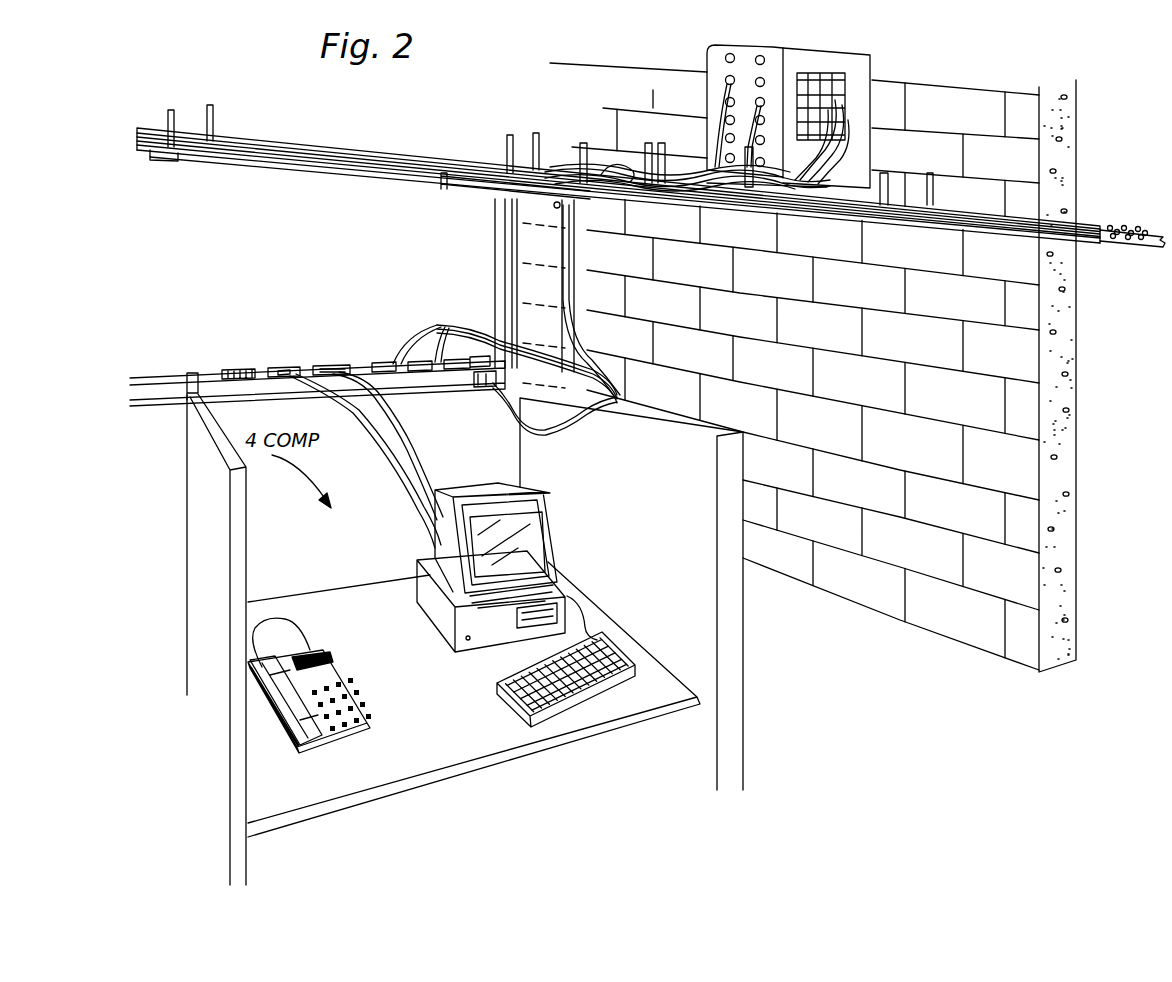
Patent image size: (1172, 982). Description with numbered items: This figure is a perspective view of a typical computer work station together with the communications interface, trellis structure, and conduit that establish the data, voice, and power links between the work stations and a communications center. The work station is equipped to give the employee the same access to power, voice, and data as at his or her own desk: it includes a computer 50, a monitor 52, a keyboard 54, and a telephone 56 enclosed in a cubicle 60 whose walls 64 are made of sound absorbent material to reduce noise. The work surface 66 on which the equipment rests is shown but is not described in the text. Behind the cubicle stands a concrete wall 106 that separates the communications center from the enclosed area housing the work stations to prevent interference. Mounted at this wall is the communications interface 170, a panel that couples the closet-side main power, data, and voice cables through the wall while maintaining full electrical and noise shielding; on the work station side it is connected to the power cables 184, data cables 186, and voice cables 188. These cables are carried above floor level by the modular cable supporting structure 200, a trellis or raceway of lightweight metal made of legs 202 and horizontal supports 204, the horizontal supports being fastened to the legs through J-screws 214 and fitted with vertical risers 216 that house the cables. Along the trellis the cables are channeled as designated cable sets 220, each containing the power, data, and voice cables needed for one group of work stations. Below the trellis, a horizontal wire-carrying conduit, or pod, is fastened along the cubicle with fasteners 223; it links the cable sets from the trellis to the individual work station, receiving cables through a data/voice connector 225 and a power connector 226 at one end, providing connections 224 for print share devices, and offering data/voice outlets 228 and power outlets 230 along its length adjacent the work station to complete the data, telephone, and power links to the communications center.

The computer 50 is at (437, 568).
The monitor 52 is at (537, 538).
The keyboard 54 is at (494, 686).
The telephone 56 is at (263, 657).
The cubicle 60 is at (684, 495).
The walls 64 is at (722, 621).
The work surface 66 is at (418, 781).
The concrete wall 106 is at (940, 554).
The communications interface 170 is at (780, 82).
The power cables 184 is at (820, 156).
The data cables 186 is at (817, 74).
The voice cables 188 is at (832, 104).
The modular cable supporting structure 200 is at (651, 178).
The legs 202 is at (496, 223).
The horizontal supports 204 is at (322, 160).
The J-screws 214 is at (497, 175).
The vertical risers 216 is at (208, 108).
The cable sets 220 is at (595, 331).
The fasteners 223 is at (187, 372).
The connections 224 is at (483, 357).
The data/voice connector 225 is at (398, 358).
The power connector 226 is at (484, 388).
The data/voice outlets 228 is at (320, 366).
The power outlets 230 is at (285, 369).